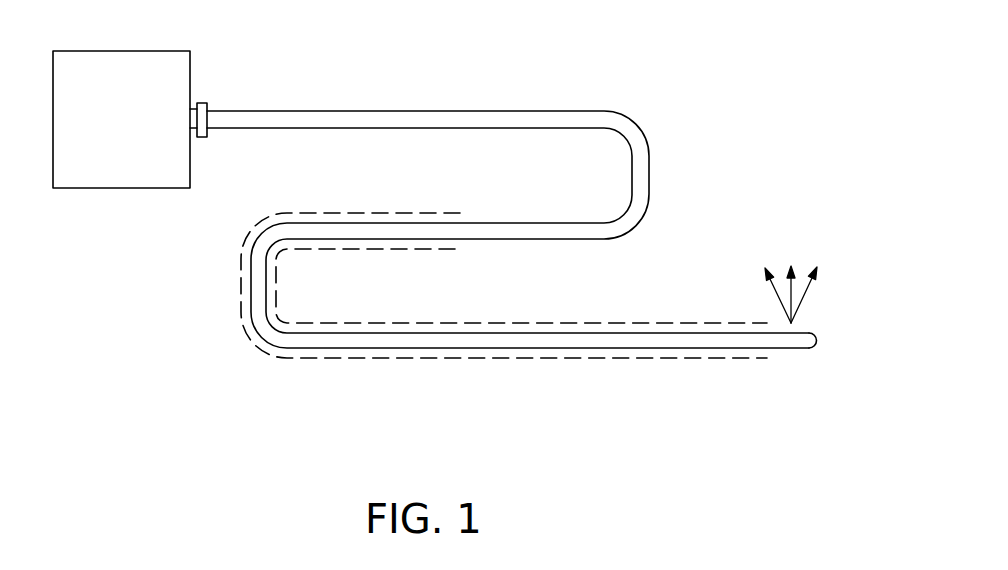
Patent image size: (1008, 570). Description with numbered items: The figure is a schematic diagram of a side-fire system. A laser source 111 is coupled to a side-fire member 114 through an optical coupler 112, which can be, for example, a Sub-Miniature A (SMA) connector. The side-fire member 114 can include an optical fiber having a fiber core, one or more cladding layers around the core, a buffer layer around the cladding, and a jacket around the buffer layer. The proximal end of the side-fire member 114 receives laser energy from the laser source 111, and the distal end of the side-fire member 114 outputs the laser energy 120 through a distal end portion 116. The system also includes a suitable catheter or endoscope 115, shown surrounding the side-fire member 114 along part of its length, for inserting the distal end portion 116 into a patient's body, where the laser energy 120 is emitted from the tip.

The laser source 111 is at (120, 51).
The optical coupler 112 is at (201, 103).
The side-fire member 114 is at (462, 111).
The catheter or endoscope 115 is at (538, 324).
The distal end portion 116 is at (799, 372).
The laser energy 120 is at (815, 249).